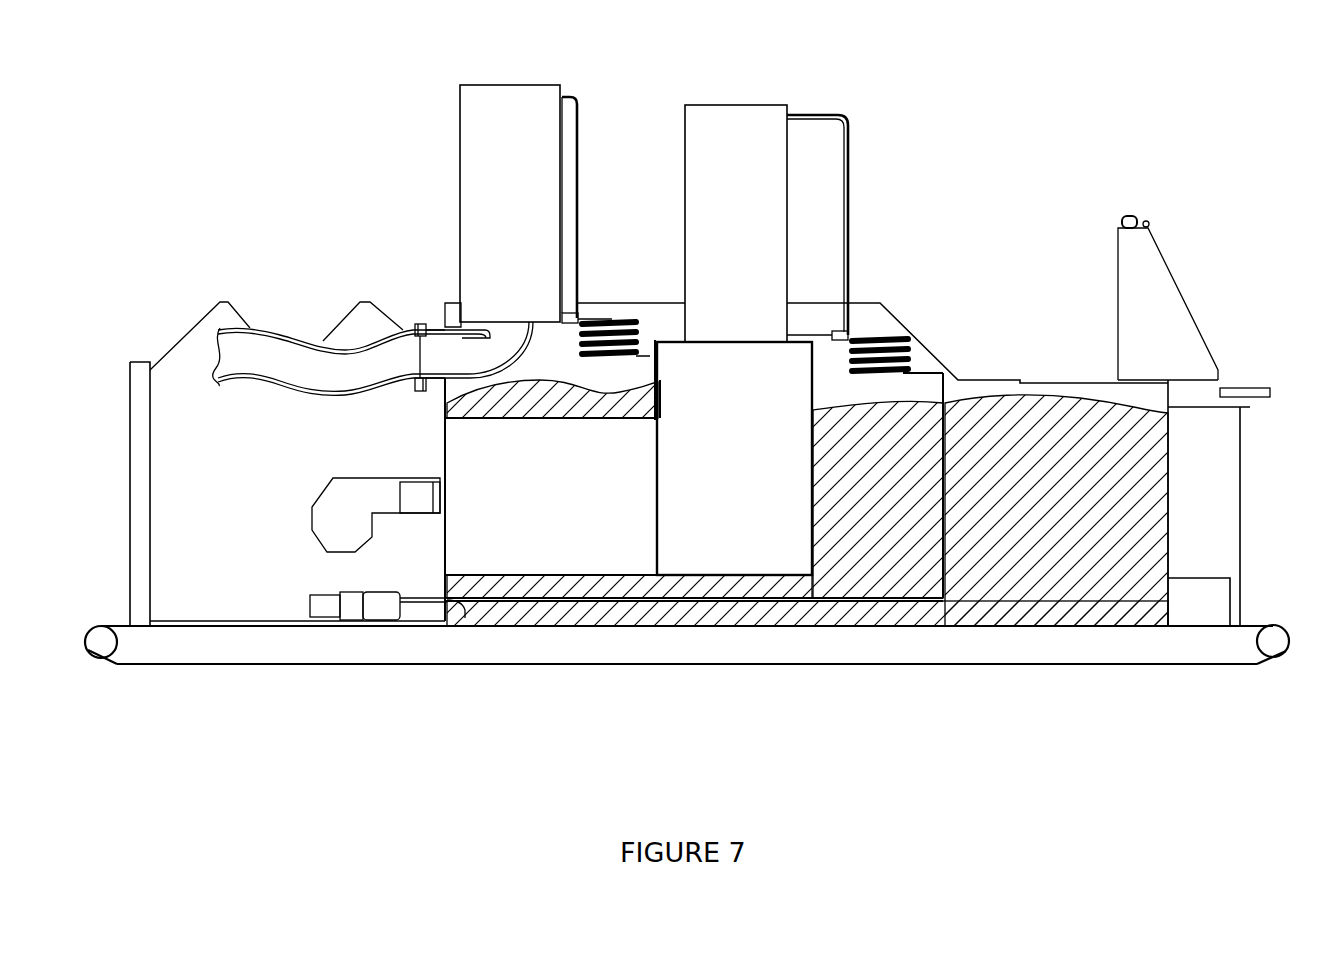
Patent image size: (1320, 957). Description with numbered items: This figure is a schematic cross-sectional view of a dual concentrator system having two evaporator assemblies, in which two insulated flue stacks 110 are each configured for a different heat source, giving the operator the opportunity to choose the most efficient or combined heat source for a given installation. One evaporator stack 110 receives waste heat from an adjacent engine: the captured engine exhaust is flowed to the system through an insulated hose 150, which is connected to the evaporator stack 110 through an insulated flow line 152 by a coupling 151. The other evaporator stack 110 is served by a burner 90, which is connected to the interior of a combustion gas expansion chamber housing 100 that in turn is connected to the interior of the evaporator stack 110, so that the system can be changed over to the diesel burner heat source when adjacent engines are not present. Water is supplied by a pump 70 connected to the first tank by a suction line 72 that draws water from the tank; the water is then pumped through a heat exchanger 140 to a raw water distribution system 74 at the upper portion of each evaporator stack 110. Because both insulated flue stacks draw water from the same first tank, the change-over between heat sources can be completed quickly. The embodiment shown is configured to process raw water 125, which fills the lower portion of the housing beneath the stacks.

The pump 70 is at (353, 602).
The suction line 72 is at (437, 603).
The raw water distribution system 74 is at (577, 128).
The burner 90 is at (367, 478).
The combustion gas expansion chamber housing 100 is at (547, 510).
The evaporator stack 110 is at (507, 175).
The raw water 125 is at (1020, 382).
The heat exchanger 140 is at (610, 310).
The insulated hose 150 is at (343, 373).
The coupling 151 is at (417, 330).
The insulated flow line 152 is at (450, 353).